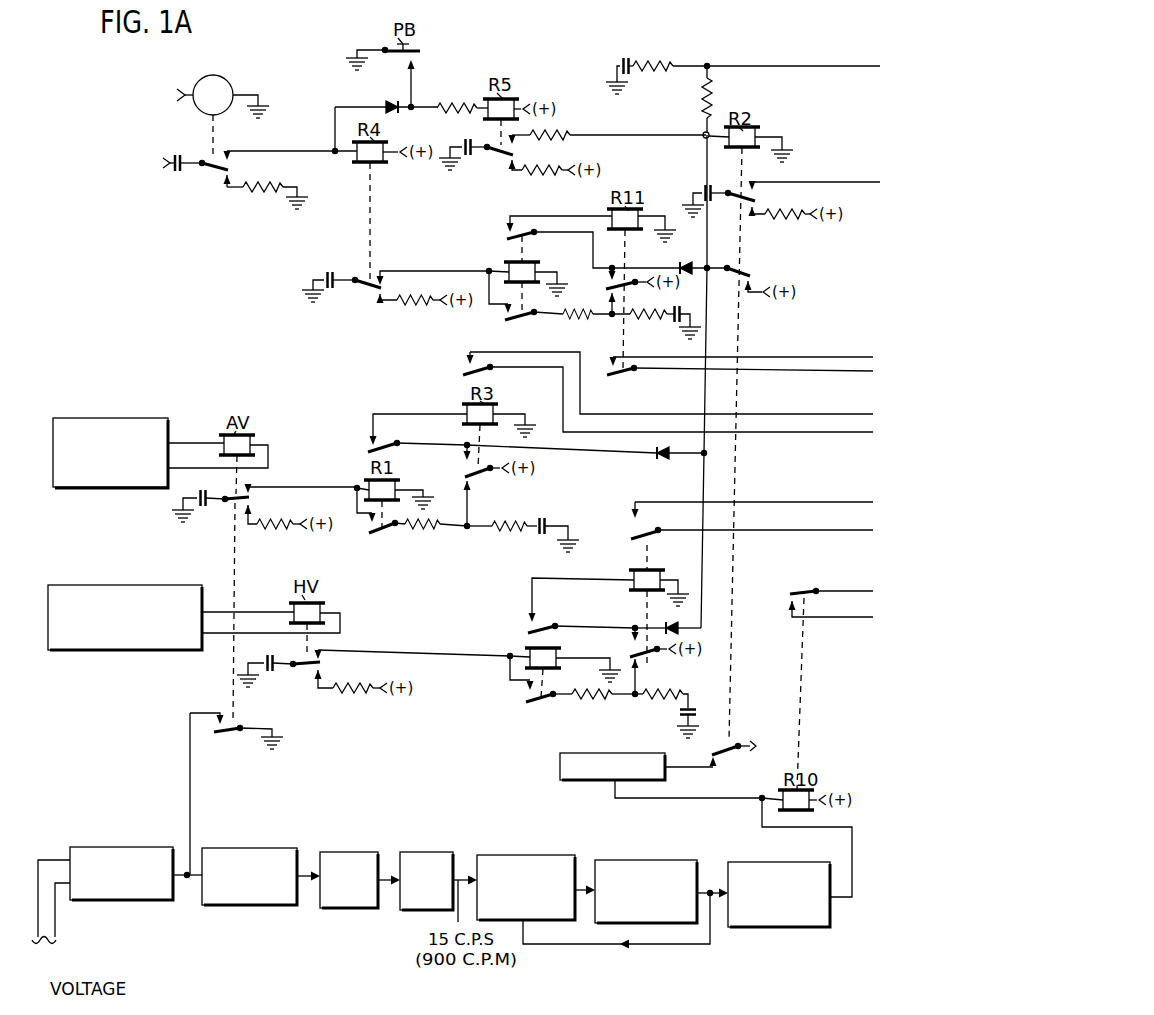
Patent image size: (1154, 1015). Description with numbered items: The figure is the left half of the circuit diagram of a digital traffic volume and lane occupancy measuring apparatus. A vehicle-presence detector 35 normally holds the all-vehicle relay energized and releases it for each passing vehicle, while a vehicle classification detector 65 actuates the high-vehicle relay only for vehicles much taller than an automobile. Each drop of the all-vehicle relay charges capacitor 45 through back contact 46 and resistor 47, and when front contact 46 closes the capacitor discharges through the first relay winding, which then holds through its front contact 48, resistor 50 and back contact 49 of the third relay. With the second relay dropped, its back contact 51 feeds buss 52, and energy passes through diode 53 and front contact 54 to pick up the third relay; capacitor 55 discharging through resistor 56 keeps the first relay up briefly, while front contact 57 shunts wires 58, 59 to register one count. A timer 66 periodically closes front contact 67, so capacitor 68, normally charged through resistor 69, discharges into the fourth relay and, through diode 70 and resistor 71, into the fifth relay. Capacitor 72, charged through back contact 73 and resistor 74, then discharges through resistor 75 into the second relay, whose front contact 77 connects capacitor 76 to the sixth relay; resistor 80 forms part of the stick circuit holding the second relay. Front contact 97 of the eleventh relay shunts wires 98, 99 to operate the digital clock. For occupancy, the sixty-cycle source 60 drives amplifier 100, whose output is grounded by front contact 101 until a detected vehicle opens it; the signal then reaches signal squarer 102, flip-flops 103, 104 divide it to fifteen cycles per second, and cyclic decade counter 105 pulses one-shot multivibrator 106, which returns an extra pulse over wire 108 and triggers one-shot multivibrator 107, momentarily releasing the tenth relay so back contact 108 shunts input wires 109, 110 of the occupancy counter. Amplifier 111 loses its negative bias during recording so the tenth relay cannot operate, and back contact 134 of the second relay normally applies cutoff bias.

The vehicle-presence detector 35 is at (128, 418).
The capacitor 45 is at (199, 515).
The contact of relay AV 46 is at (236, 497).
The resistor 47 is at (295, 532).
The front contact of relay R1 48 is at (388, 535).
The back contact of relay R3 49 is at (488, 479).
The resistor 50 is at (431, 539).
The back contact of relay R2 51 is at (746, 272).
The buss 52 is at (705, 393).
The diode 53 is at (664, 461).
The front contact of relay R1 54 is at (394, 444).
The capacitor 55 is at (548, 523).
The resistor 56 is at (502, 540).
The front contact of relay R3 57 is at (494, 373).
The wire 58 is at (828, 421).
The wire 59 is at (829, 441).
The sixty-cycle power source 60 is at (52, 947).
The vehicle classification detector and front contact of relay R4 65 is at (366, 290).
The timer 66 is at (247, 75).
The contact of timer 67 is at (208, 159).
The capacitor 68 is at (168, 172).
The resistor 69 is at (258, 196).
The diode 70 is at (388, 102).
The resistor 71 is at (450, 103).
The capacitor 72 is at (464, 141).
The contact of relay R5 73 is at (498, 158).
The resistor 74 is at (552, 179).
The resistor 75 is at (559, 134).
The capacitor 76 is at (716, 190).
The front contact of relay R2 77 is at (738, 202).
The resistor 80 is at (700, 101).
The front contact of relay R11 97 is at (622, 383).
The wire 98 is at (834, 349).
The wire 99 is at (827, 374).
The amplifier 100 is at (124, 847).
The front contact of relay AV 101 is at (226, 740).
The signal squarer 102 is at (255, 844).
The flip-flop 103 is at (350, 852).
The flip-flop 104 is at (425, 852).
The cyclic decade counter 105 is at (520, 855).
The one-shot multivibrator 106 is at (648, 860).
The one-shot multivibrator 107 is at (790, 860).
The wire and back contact of relay R10 108 is at (797, 590).
The input wire 109 is at (821, 619).
The input wire 110 is at (821, 596).
The amplifier 111 is at (627, 753).
The back contact of relay R2 134 is at (733, 751).